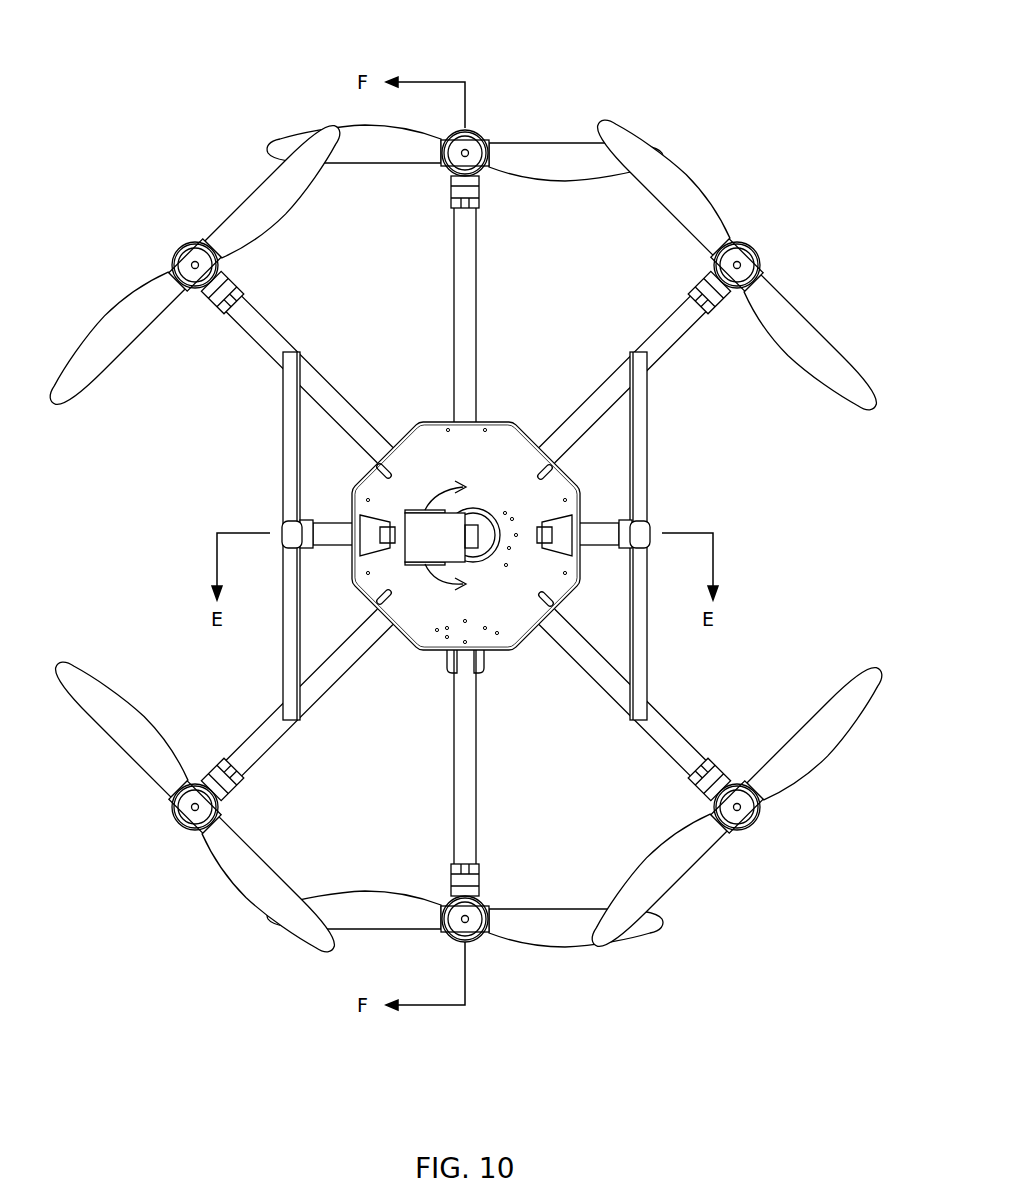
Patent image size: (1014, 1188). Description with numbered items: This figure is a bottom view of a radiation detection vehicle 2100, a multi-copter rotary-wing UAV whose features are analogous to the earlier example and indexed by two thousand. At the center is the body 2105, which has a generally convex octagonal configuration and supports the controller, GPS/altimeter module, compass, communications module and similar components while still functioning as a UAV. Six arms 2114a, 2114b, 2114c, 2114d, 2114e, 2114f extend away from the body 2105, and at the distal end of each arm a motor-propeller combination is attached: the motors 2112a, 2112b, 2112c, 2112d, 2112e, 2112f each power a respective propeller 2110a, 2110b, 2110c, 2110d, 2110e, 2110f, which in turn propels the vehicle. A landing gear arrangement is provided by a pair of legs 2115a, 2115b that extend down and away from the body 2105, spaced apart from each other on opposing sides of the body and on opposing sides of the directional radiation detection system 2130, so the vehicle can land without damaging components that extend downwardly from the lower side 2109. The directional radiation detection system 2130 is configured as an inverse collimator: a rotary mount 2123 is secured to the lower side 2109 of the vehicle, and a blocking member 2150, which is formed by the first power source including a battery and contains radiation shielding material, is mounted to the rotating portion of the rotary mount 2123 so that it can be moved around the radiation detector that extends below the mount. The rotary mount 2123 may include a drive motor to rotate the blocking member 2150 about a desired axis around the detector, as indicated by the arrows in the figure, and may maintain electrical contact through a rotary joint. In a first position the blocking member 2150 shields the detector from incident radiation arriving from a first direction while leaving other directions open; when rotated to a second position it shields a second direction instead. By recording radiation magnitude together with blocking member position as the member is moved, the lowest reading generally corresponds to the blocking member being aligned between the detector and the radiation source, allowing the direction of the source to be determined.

The radiation detection vehicle 2100 is at (200, 89).
The body 2105 is at (432, 440).
The lower side 2109 is at (490, 657).
The propeller 2110a is at (515, 162).
The propeller 2110b is at (785, 312).
The propeller 2110c is at (797, 757).
The propeller 2110d is at (547, 918).
The propeller 2110e is at (135, 747).
The propeller 2110f is at (130, 322).
The motor 2112a is at (470, 148).
The motor 2112b is at (740, 262).
The motor 2112c is at (752, 822).
The motor 2112d is at (477, 930).
The motor 2112e is at (174, 820).
The motor 2112f is at (185, 262).
The arm 2114a is at (472, 305).
The arm 2114b is at (692, 305).
The arm 2114c is at (675, 747).
The arm 2114d is at (460, 836).
The arm 2114e is at (258, 737).
The arm 2114f is at (265, 335).
The landing gear leg 2115a is at (293, 462).
The landing gear leg 2115b is at (640, 465).
The rotary mount 2123 is at (478, 505).
The directional radiation detection system 2130 is at (505, 549).
The blocking member 2150 is at (415, 560).